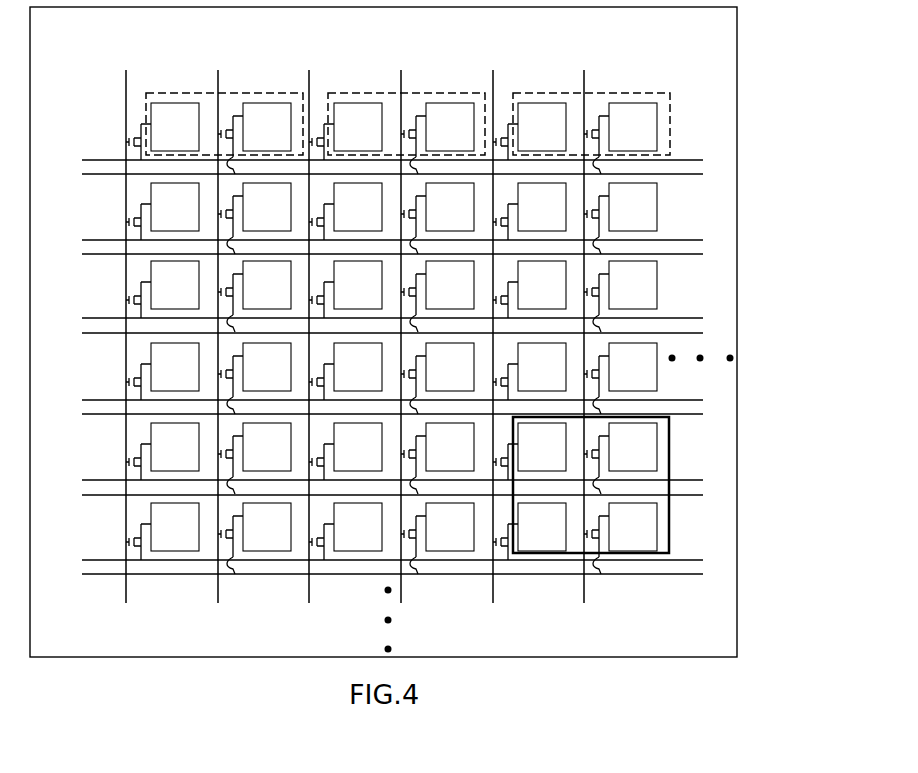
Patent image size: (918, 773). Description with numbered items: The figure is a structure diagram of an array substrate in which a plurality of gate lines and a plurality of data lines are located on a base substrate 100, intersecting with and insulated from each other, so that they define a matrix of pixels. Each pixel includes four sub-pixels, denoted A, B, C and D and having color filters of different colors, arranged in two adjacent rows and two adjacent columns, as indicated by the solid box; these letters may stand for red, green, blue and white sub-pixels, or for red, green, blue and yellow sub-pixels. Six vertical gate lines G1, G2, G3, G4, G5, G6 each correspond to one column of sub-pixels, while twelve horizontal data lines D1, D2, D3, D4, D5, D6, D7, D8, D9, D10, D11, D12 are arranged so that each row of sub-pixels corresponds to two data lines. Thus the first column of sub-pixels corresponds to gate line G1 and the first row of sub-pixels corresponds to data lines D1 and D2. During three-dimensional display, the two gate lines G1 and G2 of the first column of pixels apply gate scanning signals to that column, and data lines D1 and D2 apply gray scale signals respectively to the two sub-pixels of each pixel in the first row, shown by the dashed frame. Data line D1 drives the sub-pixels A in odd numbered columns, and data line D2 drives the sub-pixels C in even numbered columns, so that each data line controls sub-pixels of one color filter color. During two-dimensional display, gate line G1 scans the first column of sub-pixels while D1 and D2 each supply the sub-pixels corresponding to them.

The base substrate 100 is at (683, 102).
The gate line G1 is at (128, 324).
The gate line G2 is at (220, 324).
The gate line G3 is at (311, 324).
The gate line G4 is at (403, 324).
The gate line G5 is at (495, 324).
The gate line G6 is at (586, 324).
The data line D1 is at (378, 159).
The data line D2 is at (378, 178).
The data line D3 is at (378, 239).
The data line D4 is at (378, 258).
The data line D5 is at (378, 317).
The data line D6 is at (378, 337).
The data line D7 is at (378, 399).
The data line D8 is at (378, 418).
The data line D9 is at (378, 479).
The data line D10 is at (373, 499).
The data line D11 is at (373, 559).
The data line D12 is at (373, 578).